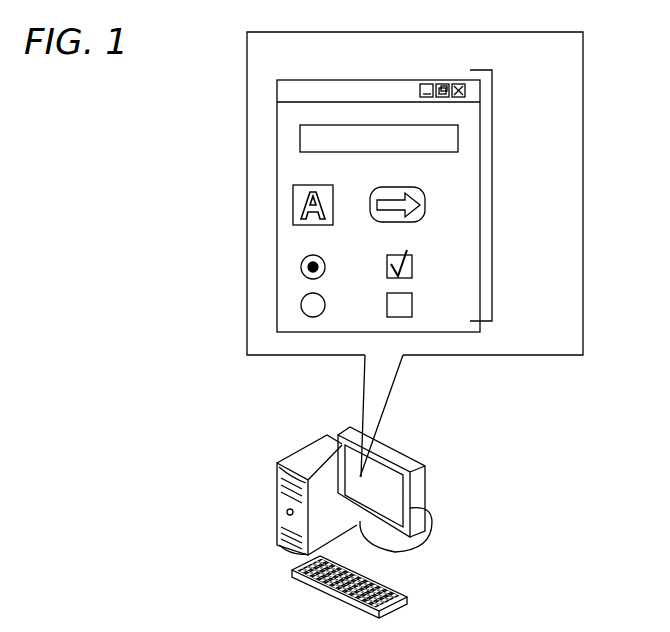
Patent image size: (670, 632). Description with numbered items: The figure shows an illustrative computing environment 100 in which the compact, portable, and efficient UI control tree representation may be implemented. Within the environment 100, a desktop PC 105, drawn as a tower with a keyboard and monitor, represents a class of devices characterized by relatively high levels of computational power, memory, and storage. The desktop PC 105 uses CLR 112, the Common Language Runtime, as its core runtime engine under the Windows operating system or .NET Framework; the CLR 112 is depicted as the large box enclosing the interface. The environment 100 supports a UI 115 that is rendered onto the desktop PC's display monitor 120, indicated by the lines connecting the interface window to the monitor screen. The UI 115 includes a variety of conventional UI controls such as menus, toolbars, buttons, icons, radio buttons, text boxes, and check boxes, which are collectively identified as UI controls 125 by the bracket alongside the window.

The computing environment 100 is at (182, 275).
The desktop PC 105 is at (382, 511).
The CLR 112 is at (583, 78).
The UI 115 is at (296, 79).
The display monitor 120 is at (378, 482).
The UI controls 125 is at (492, 195).